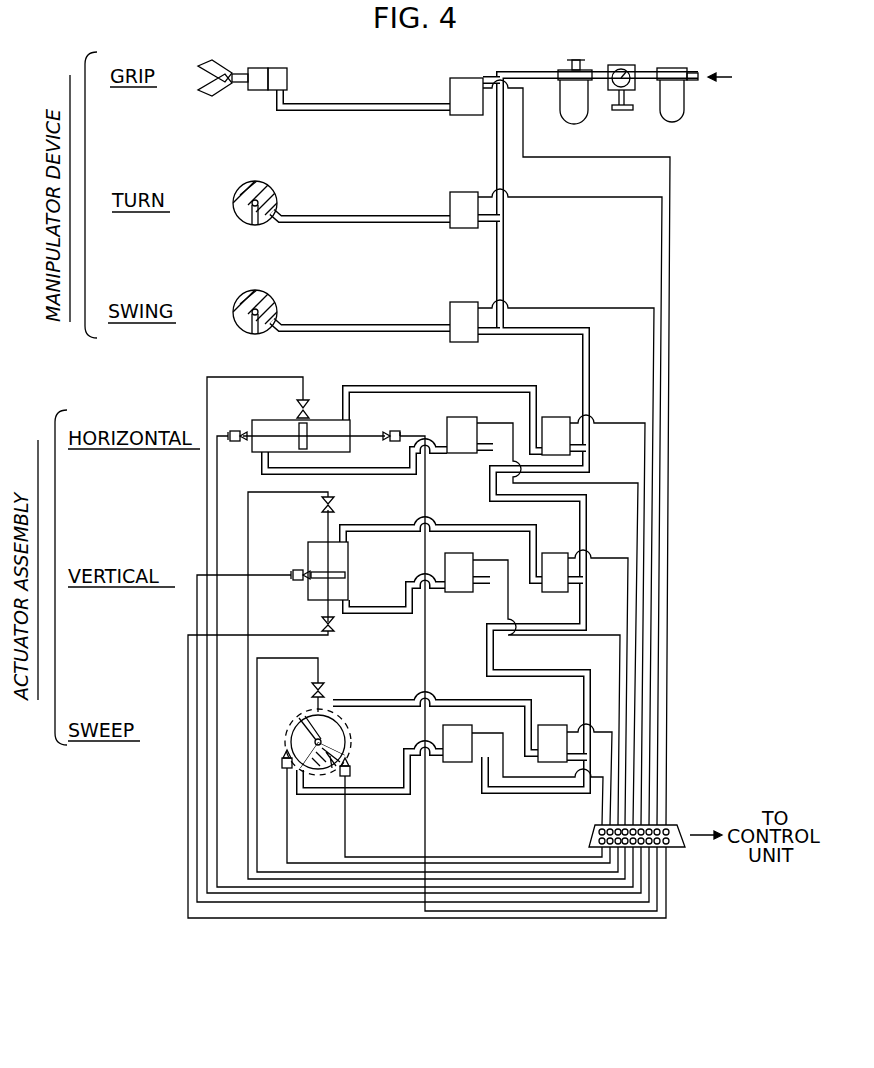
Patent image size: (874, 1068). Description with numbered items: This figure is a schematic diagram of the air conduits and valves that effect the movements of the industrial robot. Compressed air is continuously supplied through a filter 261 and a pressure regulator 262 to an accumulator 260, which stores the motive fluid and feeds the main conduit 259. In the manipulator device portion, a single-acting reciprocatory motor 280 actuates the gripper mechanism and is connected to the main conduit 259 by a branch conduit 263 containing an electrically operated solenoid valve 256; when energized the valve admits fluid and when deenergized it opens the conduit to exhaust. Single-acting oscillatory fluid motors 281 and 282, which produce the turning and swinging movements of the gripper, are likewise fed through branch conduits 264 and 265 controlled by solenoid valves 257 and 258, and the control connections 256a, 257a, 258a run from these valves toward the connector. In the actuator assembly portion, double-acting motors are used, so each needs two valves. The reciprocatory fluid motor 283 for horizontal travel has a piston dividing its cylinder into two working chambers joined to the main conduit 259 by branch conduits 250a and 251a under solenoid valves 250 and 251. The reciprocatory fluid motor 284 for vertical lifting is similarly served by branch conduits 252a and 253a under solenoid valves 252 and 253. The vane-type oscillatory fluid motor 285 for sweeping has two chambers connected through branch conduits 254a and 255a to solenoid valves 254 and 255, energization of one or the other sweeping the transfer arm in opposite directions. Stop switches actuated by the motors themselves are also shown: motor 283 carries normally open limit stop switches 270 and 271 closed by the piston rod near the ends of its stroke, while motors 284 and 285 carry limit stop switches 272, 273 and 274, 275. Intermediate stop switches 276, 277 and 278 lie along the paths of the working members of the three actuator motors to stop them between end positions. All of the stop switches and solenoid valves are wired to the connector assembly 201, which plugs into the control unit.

The connector assembly 201 is at (684, 824).
The solenoid valve 250 is at (464, 456).
The branch conduit 250a is at (340, 472).
The solenoid valve 251 is at (552, 410).
The branch conduit 251a is at (480, 386).
The solenoid valve 252 is at (468, 560).
The branch conduit 252a is at (378, 607).
The solenoid valve 253 is at (556, 552).
The branch conduit 253a is at (458, 528).
The solenoid valve 254 is at (457, 766).
The branch conduit 254a is at (376, 800).
The solenoid valve 255 is at (555, 722).
The branch conduit 255a is at (458, 703).
The solenoid valve 256 is at (462, 118).
The grip valve control line 256a is at (692, 178).
The solenoid valve 257 is at (460, 232).
The turn valve control line 257a is at (666, 250).
The solenoid valve 258 is at (455, 344).
The swing valve control line 258a is at (570, 310).
The main conduit 259 is at (502, 262).
The accumulator 260 is at (568, 117).
The filter 261 is at (624, 64).
The pressure regulator 262 is at (668, 118).
The branch conduit 263 is at (366, 112).
The branch conduit 264 is at (370, 214).
The branch conduit 265 is at (373, 324).
The limit stop switch 270 is at (395, 428).
The limit stop switch 271 is at (232, 428).
The limit stop switch 272 is at (338, 500).
The limit stop switch 273 is at (340, 624).
The limit stop switch 274 is at (352, 772).
The limit stop switch 275 is at (290, 775).
The limit valve 276 is at (303, 398).
The intermediate stop switch 277 is at (296, 568).
The intermediate stop switch 278 is at (330, 686).
The reciprocatory motor 280 is at (276, 68).
The oscillatory fluid motor 281 is at (272, 190).
The oscillatory fluid motor 282 is at (272, 298).
The reciprocatory fluid motor 283 is at (330, 418).
The reciprocatory fluid motor 284 is at (349, 555).
The oscillatory fluid motor 285 is at (305, 728).